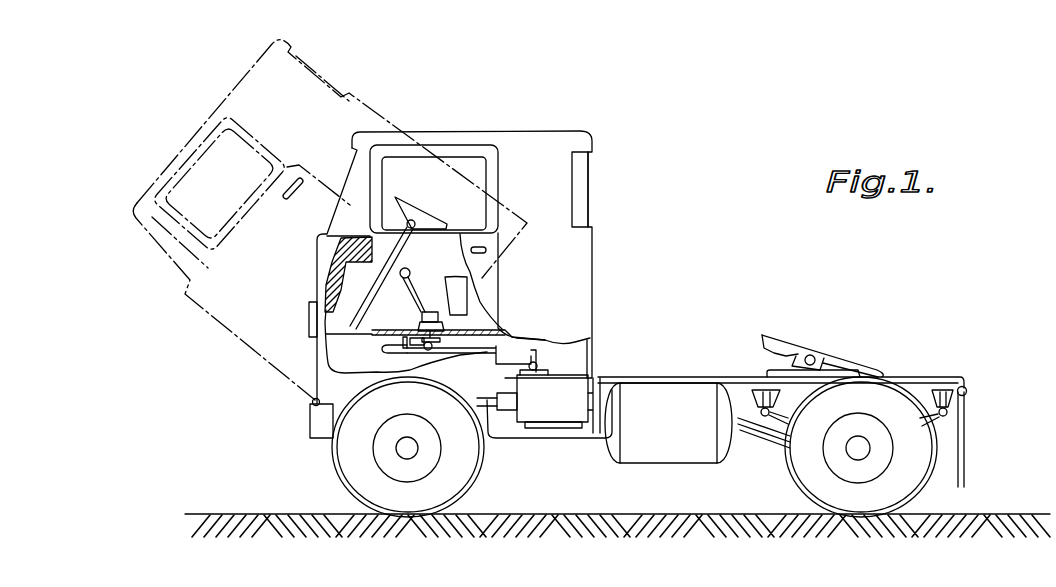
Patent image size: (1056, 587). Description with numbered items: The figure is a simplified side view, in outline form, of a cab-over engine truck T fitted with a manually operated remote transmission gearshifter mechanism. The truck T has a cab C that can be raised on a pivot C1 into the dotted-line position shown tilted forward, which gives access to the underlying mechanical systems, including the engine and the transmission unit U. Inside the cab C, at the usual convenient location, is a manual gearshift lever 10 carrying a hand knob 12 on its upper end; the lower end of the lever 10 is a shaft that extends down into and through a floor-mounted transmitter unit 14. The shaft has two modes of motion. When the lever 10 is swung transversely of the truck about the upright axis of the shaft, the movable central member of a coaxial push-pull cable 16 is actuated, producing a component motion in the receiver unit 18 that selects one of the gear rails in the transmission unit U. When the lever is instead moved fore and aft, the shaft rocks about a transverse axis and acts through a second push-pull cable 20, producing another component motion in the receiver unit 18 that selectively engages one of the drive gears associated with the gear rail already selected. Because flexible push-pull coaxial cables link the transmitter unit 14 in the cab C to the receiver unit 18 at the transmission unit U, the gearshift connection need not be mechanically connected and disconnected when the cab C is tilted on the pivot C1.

The cab C is at (387, 115).
The pivot C1 is at (313, 403).
The manual gearshift lever 10 is at (418, 303).
The hand knob 12 is at (409, 270).
The transmitter unit 14 is at (425, 319).
The coaxial push-pull cable 16 is at (394, 332).
The receiver unit 18 is at (560, 347).
The second push-pull cable 20 is at (421, 352).
The transmission unit U is at (567, 413).
The cab-over engine truck T is at (700, 338).